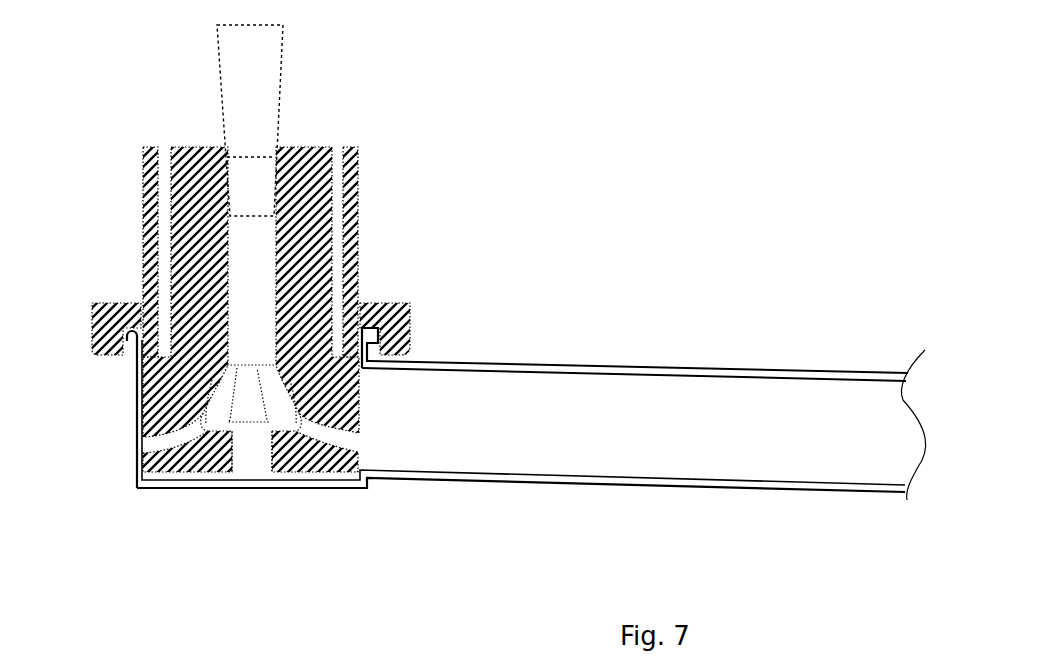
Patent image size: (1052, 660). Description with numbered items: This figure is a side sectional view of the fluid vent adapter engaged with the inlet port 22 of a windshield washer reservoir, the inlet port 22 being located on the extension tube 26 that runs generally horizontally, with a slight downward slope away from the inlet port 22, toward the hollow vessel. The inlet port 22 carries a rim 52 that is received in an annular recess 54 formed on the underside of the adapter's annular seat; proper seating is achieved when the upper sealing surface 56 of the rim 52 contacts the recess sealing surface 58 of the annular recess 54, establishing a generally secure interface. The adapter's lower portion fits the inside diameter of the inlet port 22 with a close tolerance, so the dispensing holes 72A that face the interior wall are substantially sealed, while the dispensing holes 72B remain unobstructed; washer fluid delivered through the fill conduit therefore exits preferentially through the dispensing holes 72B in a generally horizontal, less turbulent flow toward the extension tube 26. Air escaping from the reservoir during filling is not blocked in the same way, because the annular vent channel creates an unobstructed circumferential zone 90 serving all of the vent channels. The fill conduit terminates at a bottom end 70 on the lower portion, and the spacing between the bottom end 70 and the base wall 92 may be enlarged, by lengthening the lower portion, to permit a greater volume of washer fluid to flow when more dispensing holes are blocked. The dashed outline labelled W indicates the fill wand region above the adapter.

The inlet port 22 is at (138, 423).
The extension tube 26 is at (542, 370).
The rim 52 is at (135, 338).
The annular recess 54 is at (380, 347).
The upper sealing surface 56 is at (98, 353).
The recess sealing surface 58 is at (400, 352).
The bottom end 70 is at (267, 518).
The dispensing holes aligned to the interior wall 72A is at (148, 447).
The unobstructed dispensing holes 72B is at (352, 445).
The unobstructed circumferential zone 90 is at (157, 368).
The base wall 92 is at (250, 463).
The wire W is at (267, 68).